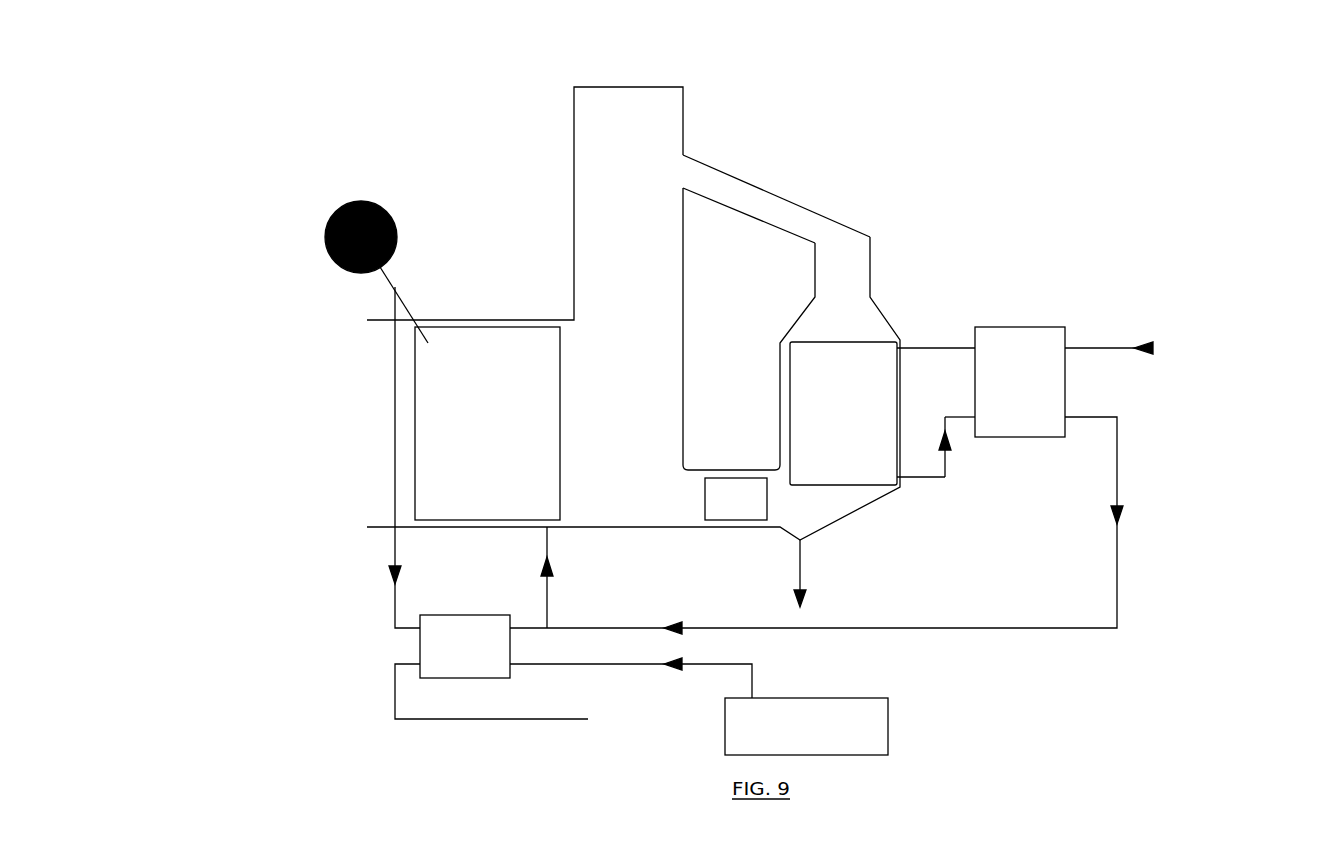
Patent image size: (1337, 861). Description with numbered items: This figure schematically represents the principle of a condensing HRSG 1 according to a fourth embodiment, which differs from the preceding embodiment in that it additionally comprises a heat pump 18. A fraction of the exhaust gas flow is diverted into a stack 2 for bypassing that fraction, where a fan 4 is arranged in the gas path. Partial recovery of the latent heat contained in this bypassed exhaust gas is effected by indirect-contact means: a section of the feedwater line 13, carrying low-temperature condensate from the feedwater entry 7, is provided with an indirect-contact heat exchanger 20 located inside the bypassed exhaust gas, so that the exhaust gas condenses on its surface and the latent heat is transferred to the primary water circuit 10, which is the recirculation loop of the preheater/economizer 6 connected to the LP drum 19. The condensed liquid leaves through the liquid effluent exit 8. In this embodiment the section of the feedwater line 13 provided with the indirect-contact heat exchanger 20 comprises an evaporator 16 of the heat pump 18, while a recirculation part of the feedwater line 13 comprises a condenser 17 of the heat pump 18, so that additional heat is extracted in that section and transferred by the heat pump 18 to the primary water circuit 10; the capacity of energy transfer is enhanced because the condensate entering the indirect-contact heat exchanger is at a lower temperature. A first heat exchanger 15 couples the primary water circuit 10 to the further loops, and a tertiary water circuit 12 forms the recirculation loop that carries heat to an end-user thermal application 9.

The HRSG 1 is at (570, 150).
The stack for bypassing a fraction of the exhaust gas flow 2 is at (760, 205).
The fan 4 is at (733, 505).
The preheater/economizer 6 is at (487, 414).
The feedwater entry 7 is at (1110, 346).
The liquid effluent exit 8 is at (806, 575).
The end-user thermal application 9 is at (725, 719).
The primary water circuit 10 is at (392, 450).
The tertiary water circuit 12 is at (393, 693).
The feedwater line 13 is at (858, 635).
The first heat exchanger 15 is at (490, 582).
The heat pump evaporator 16 is at (1011, 369).
The heat pump condenser 17 is at (1057, 407).
The heat pump 18 is at (1023, 323).
The LP drum 19 is at (357, 200).
The indirect-contact heat exchanger 20 is at (842, 382).